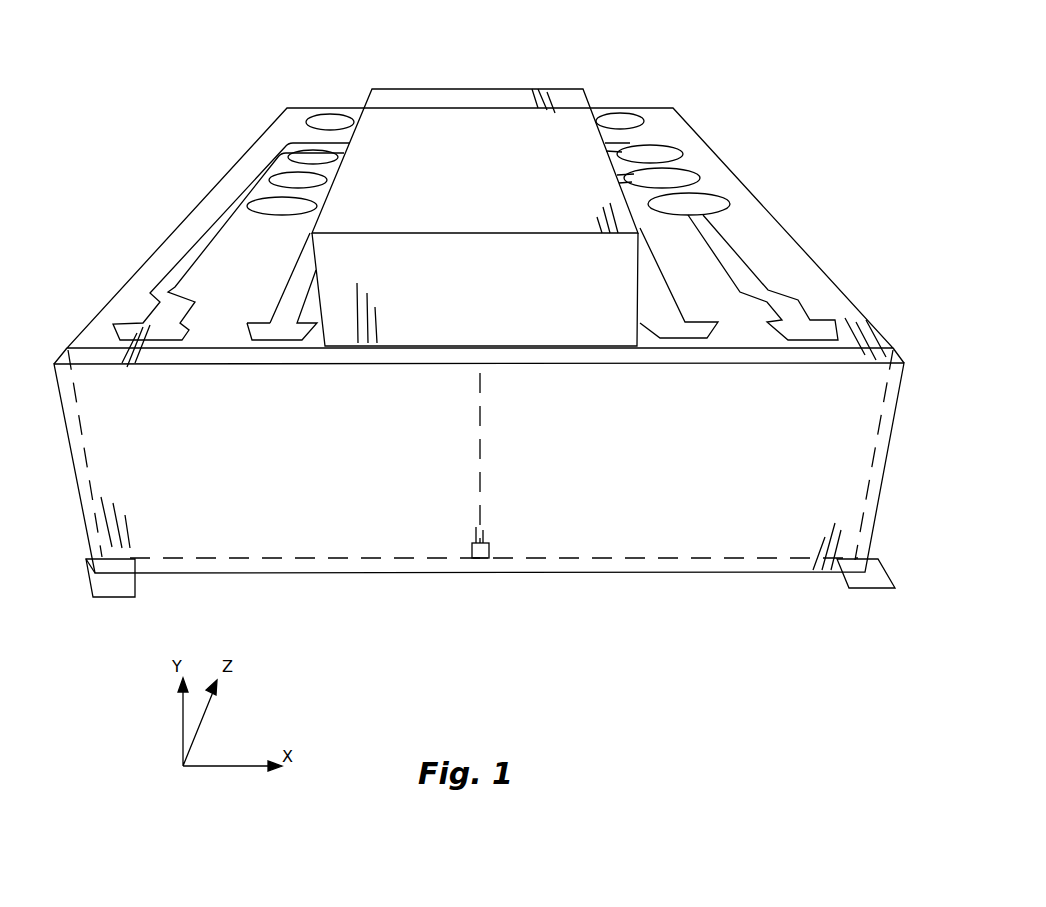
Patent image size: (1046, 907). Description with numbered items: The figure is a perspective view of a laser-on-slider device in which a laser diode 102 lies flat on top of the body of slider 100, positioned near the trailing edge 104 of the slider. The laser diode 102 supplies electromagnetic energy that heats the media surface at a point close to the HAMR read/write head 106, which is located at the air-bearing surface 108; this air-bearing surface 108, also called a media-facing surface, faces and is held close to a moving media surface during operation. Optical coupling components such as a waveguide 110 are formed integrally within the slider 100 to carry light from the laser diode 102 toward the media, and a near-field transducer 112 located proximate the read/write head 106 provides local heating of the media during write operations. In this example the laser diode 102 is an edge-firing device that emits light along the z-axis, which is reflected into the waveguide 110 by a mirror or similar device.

The slider 100 is at (682, 50).
The laser diode 102 is at (392, 90).
The trailing edge 104 is at (118, 597).
The HAMR read/write head 106 is at (482, 560).
The air-bearing surface 108 is at (883, 588).
The waveguide 110 is at (480, 437).
The near-field transducer 112 is at (478, 560).